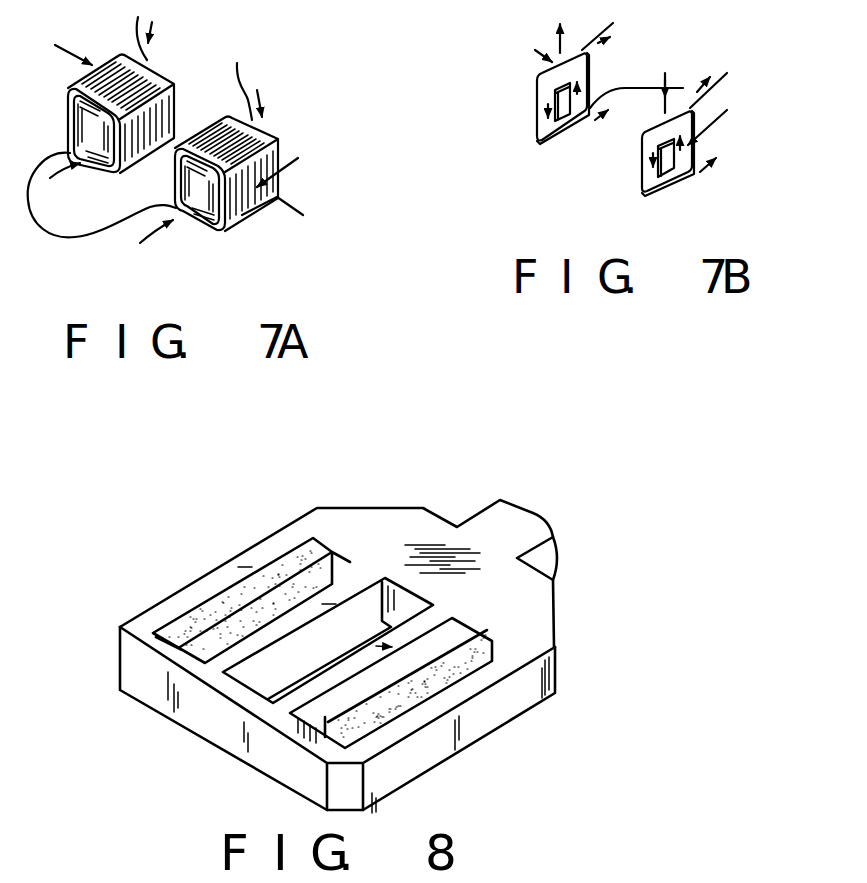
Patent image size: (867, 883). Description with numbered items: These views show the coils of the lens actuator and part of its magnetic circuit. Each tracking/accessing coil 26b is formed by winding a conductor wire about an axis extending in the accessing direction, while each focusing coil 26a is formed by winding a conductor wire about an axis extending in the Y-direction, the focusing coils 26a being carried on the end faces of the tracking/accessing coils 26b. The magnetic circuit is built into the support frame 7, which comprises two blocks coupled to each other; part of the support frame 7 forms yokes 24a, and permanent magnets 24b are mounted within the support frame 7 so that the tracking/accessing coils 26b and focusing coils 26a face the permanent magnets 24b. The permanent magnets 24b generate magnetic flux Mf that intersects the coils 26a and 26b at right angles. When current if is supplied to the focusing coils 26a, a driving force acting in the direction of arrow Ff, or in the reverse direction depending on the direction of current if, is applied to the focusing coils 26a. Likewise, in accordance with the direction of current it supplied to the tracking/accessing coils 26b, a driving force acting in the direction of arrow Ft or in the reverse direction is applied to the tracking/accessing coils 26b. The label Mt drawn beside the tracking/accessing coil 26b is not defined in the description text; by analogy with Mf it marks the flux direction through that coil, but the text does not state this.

In FIG. 7A, the tracking/accessing coil 26b is at (245, 213).
In FIG. 7A, the driving force on tracking/accessing coil Ft is at (162, 53).
In FIG. 7A, the current supplied to tracking/accessing coil it is at (258, 97).
In FIG. 7A, the moment on tubular piece Mt is at (300, 211).
In FIG. 7B, the focusing coil 26a is at (677, 177).
In FIG. 7B, the driving force on focusing coil Ff is at (667, 90).
In FIG. 7B, the magnetic flux Mf is at (693, 145).
In FIG. 7B, the current supplied to focusing coil if is at (719, 161).
In FIG. 8, the support frame 7 is at (478, 523).
In FIG. 8, the yoke 24a is at (530, 680).
In FIG. 8, the permanent magnet 24b is at (487, 637).